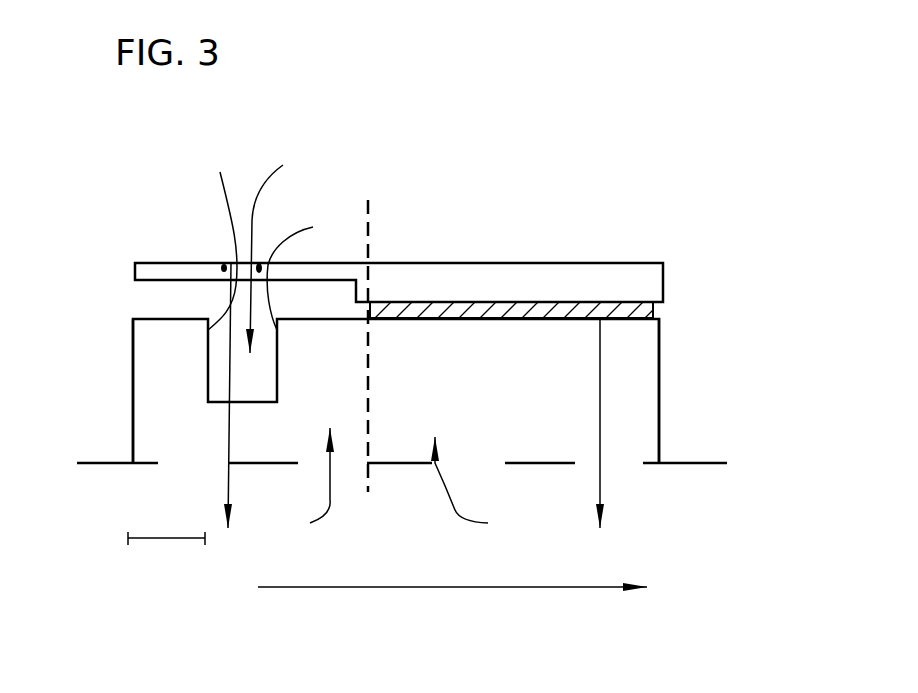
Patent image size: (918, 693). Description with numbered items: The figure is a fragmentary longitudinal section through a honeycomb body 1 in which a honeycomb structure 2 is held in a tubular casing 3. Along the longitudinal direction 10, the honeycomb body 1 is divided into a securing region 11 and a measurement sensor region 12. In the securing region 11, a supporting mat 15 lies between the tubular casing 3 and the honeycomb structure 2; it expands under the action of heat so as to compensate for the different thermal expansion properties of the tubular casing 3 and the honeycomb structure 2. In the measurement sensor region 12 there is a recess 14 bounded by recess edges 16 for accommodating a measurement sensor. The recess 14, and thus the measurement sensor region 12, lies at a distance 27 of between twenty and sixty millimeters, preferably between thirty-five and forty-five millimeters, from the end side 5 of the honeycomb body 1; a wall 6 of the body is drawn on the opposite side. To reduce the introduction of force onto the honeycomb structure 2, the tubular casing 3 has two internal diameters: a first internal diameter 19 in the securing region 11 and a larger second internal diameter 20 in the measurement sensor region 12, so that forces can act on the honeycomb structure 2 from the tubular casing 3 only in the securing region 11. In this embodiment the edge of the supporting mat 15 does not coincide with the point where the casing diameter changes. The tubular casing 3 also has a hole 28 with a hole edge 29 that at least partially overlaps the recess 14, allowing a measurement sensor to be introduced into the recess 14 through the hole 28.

The honeycomb body 1 is at (683, 362).
The honeycomb structure 2 is at (635, 445).
The tubular casing 3 is at (502, 275).
The end side 5 is at (132, 440).
The right side wall 6 is at (659, 412).
The longitudinal direction 10 is at (503, 587).
The securing region 11 is at (533, 546).
The measurement sensor region 12 is at (296, 546).
The recess 14 is at (285, 241).
The supporting mat 15 is at (655, 308).
The recess edges 16 is at (278, 229).
The first internal diameter 19 is at (600, 488).
The second internal diameter 20 is at (228, 490).
The distance 27 is at (165, 538).
The hole 28 is at (260, 262).
The hole edge 29 is at (222, 262).